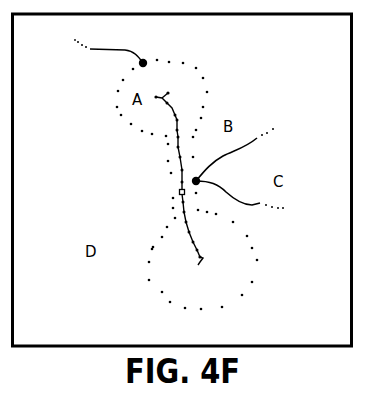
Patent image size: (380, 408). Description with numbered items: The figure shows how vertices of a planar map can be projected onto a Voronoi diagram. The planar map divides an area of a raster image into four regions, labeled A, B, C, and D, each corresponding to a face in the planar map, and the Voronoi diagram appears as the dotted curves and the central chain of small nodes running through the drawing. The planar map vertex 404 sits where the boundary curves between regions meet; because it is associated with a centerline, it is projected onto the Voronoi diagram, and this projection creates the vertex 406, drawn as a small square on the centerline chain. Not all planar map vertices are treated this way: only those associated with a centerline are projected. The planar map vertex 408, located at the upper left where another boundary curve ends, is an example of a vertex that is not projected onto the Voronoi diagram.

The planar map vertex 404 is at (238, 168).
The vertex 406 is at (178, 189).
The planar map vertex 408 is at (123, 49).